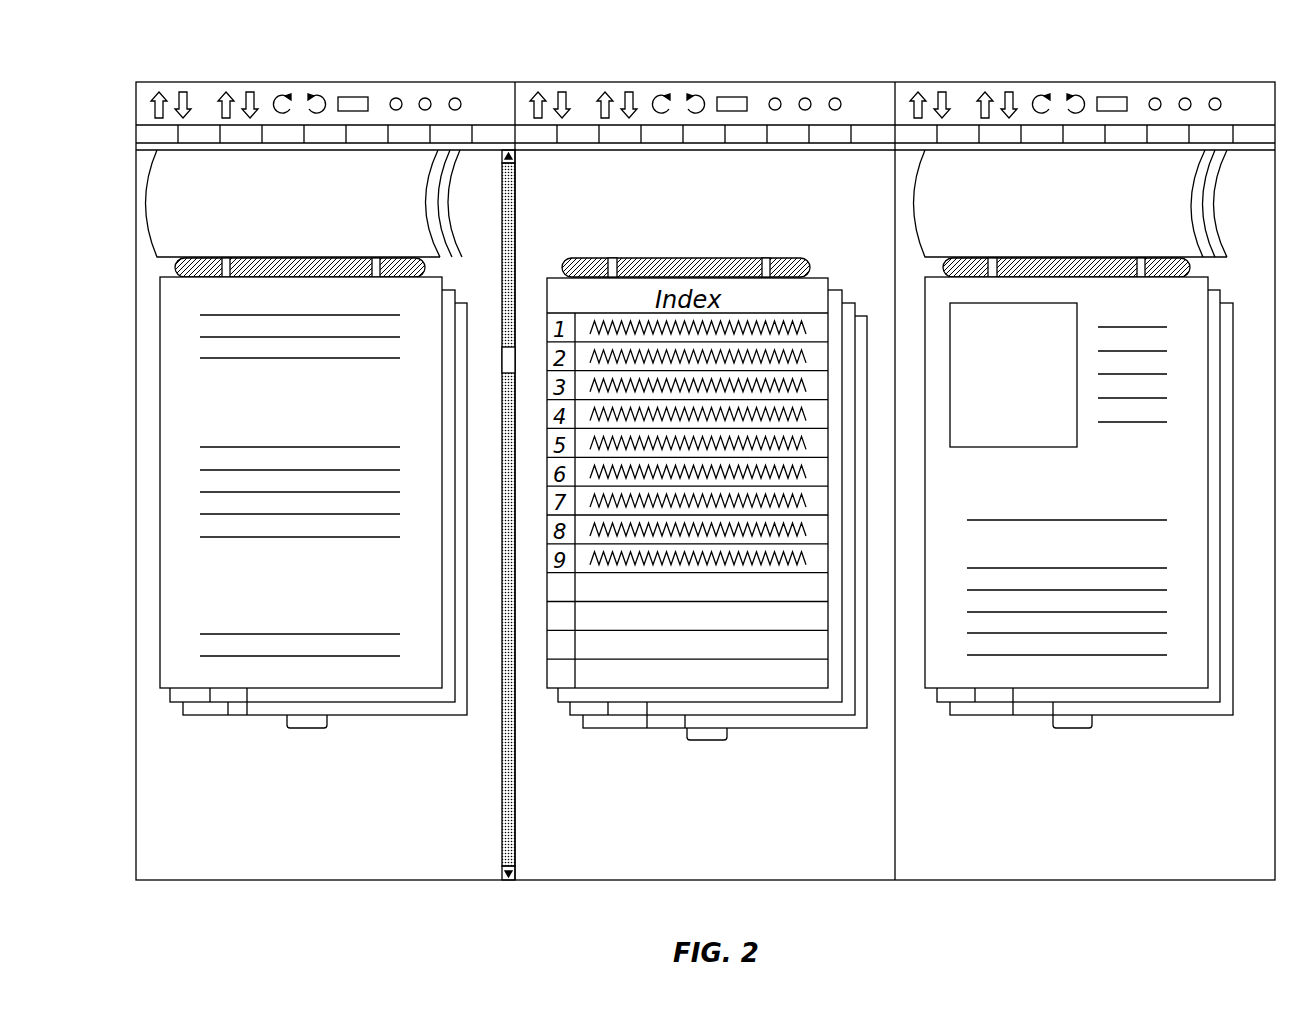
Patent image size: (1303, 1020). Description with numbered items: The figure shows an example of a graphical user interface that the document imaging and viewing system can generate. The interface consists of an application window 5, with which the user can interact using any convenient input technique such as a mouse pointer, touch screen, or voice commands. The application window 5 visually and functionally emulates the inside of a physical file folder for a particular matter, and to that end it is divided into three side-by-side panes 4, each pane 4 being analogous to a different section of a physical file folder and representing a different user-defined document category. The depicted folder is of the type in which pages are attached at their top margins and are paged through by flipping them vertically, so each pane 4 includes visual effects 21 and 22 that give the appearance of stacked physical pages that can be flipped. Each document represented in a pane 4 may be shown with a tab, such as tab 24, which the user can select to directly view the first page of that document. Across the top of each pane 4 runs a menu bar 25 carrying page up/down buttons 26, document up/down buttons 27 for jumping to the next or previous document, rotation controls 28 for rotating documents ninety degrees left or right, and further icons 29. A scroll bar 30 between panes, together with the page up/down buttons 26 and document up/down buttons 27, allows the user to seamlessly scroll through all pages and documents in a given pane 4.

The pane 4 is at (318, 880).
The application window 5 is at (1222, 82).
The visual effect 21 is at (448, 228).
The visual effect 22 is at (400, 702).
The tab 24 is at (228, 703).
The menu bar 25 is at (489, 82).
The page up/down buttons 26 is at (172, 82).
The document up/down buttons 27 is at (240, 82).
The rotation controls 28 is at (300, 82).
The view selection icons 29 is at (363, 82).
The scroll bar 30 is at (502, 788).